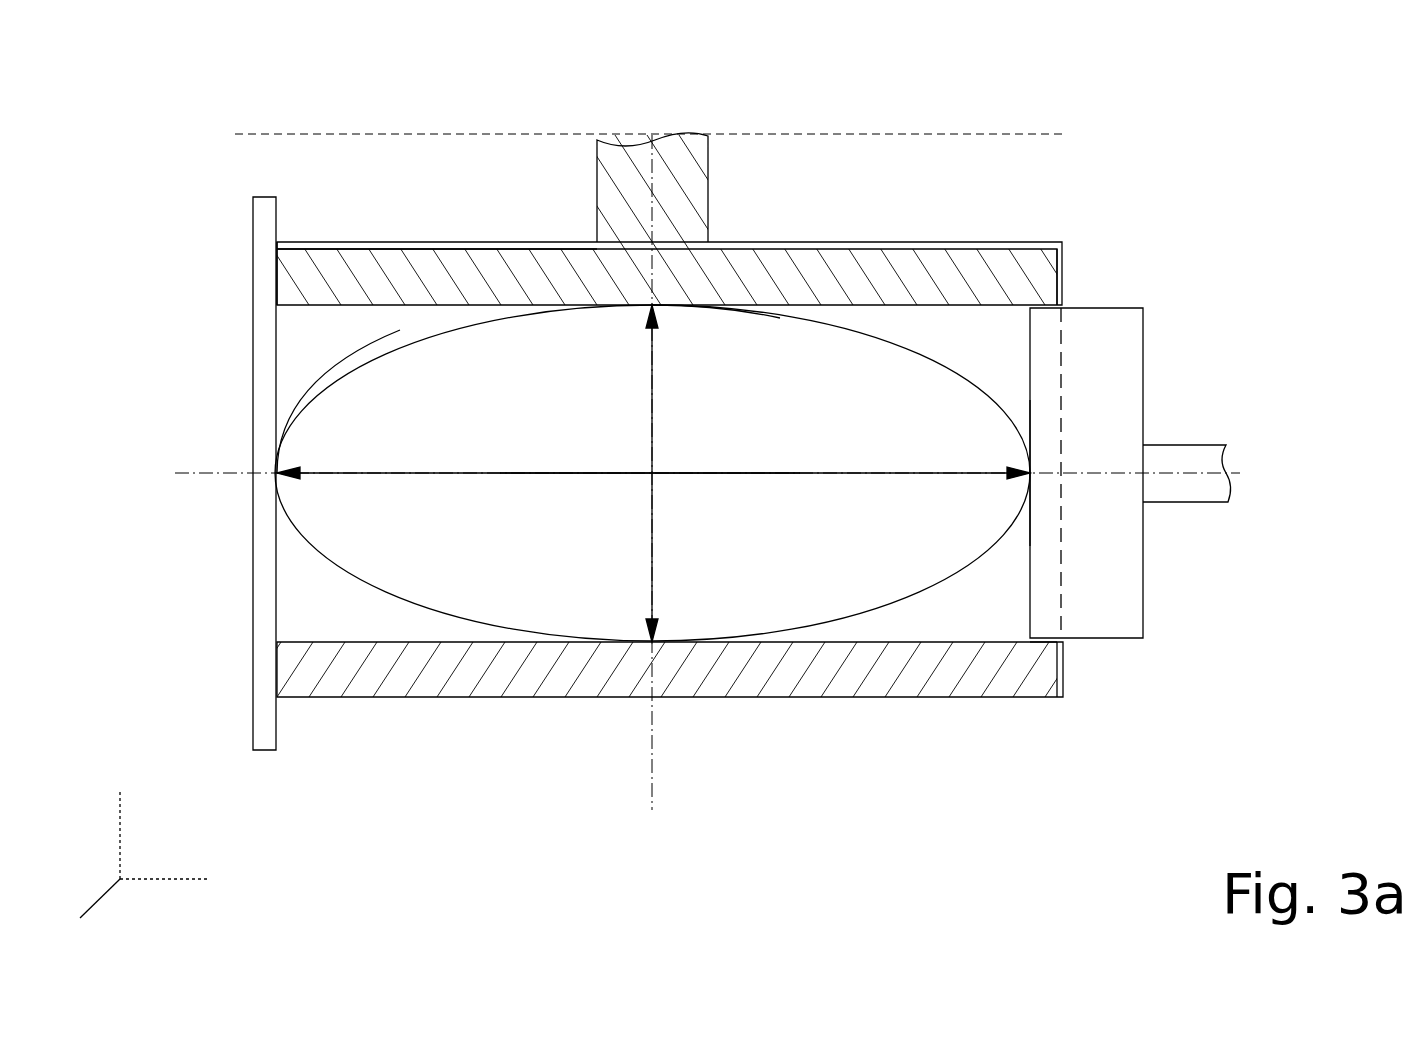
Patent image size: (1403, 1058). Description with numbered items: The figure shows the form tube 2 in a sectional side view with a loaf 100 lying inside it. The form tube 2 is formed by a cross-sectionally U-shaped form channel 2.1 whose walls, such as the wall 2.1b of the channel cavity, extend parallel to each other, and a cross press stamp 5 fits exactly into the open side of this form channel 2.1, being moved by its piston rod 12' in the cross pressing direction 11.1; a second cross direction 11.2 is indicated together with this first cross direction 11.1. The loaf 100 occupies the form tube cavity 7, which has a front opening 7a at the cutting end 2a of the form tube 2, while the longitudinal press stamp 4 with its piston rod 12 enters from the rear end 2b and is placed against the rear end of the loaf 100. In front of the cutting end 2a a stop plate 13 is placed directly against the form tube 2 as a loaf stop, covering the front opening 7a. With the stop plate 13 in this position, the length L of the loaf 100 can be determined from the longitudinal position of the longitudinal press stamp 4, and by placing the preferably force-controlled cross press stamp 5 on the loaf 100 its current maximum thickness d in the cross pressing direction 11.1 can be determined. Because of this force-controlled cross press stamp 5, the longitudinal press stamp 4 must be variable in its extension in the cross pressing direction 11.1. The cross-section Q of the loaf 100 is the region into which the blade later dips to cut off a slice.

The form tube 2 is at (654, 480).
The cutting end 2a is at (292, 232).
The rear end of the form tube 2b is at (1047, 235).
The form channel 2.1 is at (1062, 270).
The wall of the channel cavity 2.1b is at (1001, 622).
The longitudinal press stamp 4 is at (1120, 304).
The cross press stamp 5 is at (428, 265).
The form tube cavity 7 is at (652, 473).
The front opening of the form tube cavity 7a is at (282, 318).
The cross pressing direction 11.1 is at (120, 848).
The second cross direction 11.2 is at (84, 915).
The piston rod 12 is at (1187, 473).
The piston rod of the cross press stamp 12' is at (698, 187).
The stop plate 13 is at (252, 618).
The loaf 100 is at (745, 310).
The length of the loaf L is at (650, 480).
The maximum thickness of the loaf d is at (655, 572).
The cross-section of the loaf Q is at (1028, 367).